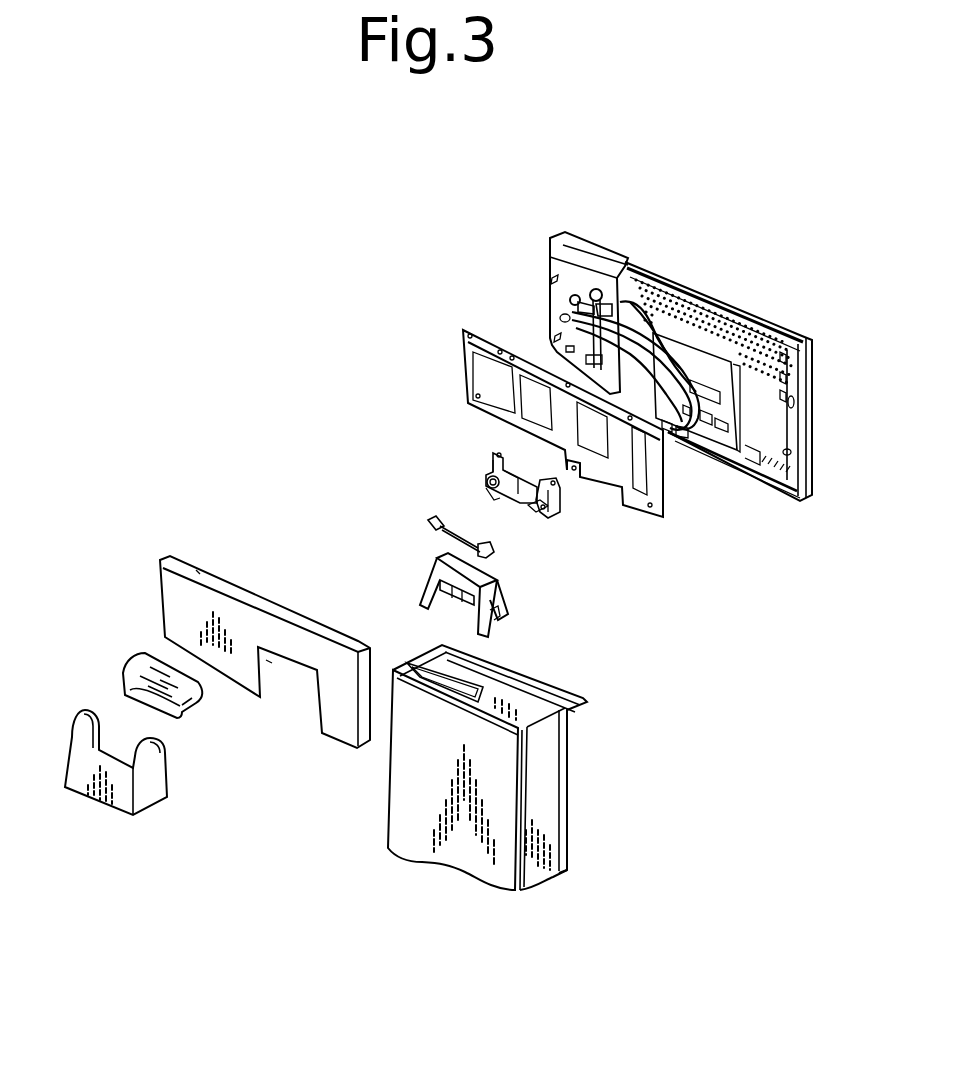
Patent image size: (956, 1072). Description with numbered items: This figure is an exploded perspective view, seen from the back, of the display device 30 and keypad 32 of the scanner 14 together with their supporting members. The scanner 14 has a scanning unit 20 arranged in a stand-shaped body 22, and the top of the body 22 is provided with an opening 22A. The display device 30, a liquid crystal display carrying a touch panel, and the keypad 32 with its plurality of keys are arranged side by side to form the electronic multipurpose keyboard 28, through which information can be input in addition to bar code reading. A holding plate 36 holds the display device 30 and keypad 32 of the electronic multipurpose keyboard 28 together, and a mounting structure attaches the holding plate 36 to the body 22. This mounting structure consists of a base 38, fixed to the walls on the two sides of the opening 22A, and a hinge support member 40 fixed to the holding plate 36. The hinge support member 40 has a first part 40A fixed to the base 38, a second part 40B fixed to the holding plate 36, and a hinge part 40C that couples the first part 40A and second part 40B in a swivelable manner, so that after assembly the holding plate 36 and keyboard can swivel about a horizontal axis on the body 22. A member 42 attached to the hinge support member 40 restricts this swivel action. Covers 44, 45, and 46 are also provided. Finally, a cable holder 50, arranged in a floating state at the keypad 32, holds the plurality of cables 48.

The scanner 14 is at (466, 268).
The scanning unit 20 is at (560, 694).
The body 22 is at (548, 790).
The opening 22A is at (436, 672).
The electronic multipurpose keyboard 28 is at (700, 238).
The display device 30 is at (758, 312).
The keypad 32 is at (562, 240).
The holding plate 36 is at (470, 332).
The base 38 is at (500, 598).
The hinge support member 40 is at (478, 458).
The first part 40A is at (552, 510).
The second part 40B is at (560, 496).
The hinge part 40C is at (500, 500).
The member 42 is at (430, 518).
The cover 44 is at (172, 562).
The cover 45 is at (140, 656).
The cover 46 is at (80, 712).
The cables 48 is at (661, 330).
The cable holder 50 is at (596, 300).